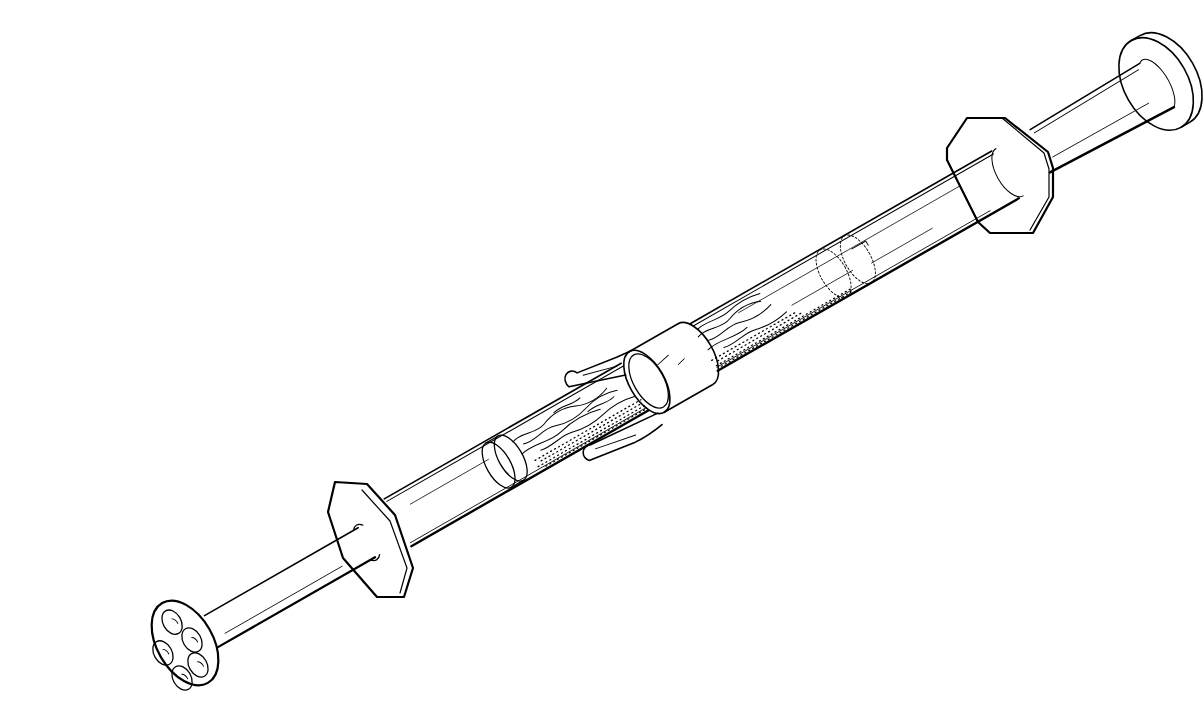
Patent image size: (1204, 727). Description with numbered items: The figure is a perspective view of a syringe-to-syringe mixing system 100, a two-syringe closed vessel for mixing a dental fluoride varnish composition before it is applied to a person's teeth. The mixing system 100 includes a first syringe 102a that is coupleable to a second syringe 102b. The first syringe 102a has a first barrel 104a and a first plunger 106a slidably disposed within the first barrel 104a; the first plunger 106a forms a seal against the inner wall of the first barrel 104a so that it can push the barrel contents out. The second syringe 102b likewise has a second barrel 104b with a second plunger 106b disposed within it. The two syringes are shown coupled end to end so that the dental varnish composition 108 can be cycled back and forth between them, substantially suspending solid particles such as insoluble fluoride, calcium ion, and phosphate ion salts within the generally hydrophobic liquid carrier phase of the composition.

The syringe-to-syringe mixing system 100 is at (506, 147).
The first syringe 102a is at (410, 414).
The second syringe 102b is at (878, 362).
The first barrel 104a is at (466, 492).
The second barrel 104b is at (891, 219).
The first plunger 106a is at (282, 590).
The second plunger 106b is at (1086, 116).
The dental varnish composition 108 is at (553, 430).